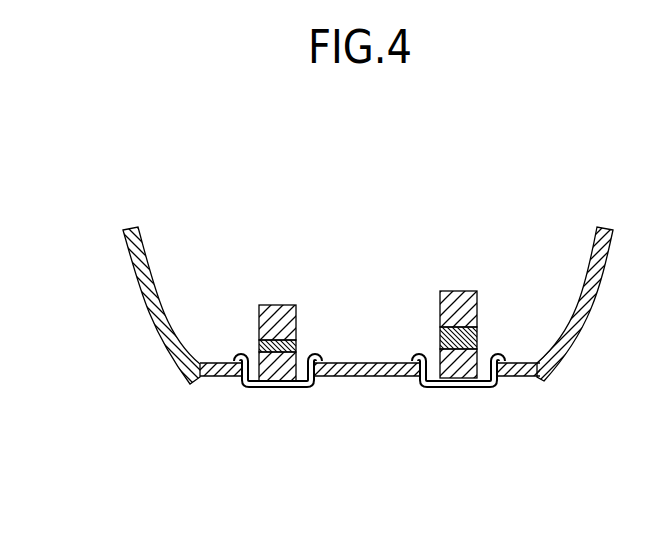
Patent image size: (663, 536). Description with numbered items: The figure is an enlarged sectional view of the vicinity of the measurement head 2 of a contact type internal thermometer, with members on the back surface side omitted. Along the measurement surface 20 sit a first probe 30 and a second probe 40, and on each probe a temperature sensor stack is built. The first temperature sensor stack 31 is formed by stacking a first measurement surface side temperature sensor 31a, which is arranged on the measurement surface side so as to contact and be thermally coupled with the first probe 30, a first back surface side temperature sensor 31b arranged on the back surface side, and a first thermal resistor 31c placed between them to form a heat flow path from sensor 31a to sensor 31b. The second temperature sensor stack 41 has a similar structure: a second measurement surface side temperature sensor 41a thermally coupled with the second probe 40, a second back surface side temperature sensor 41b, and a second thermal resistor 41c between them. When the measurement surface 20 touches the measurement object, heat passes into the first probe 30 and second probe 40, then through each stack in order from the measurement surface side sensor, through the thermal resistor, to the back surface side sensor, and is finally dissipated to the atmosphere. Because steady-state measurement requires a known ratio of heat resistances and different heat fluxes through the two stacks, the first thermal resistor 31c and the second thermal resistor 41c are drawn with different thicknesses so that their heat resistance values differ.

The measurement head 2 is at (128, 263).
The measurement surface 20 is at (367, 377).
The first probe 30 is at (282, 380).
The second probe 40 is at (455, 388).
The first temperature sensor stack 31 is at (219, 401).
The first measurement surface side temperature sensor 31a is at (276, 371).
The first back surface side temperature sensor 31b is at (259, 316).
The first thermal resistor 31c is at (259, 345).
The second temperature sensor stack 41 is at (514, 398).
The second measurement surface side temperature sensor 41a is at (462, 371).
The second back surface side temperature sensor 41b is at (477, 310).
The second thermal resistor 41c is at (477, 338).